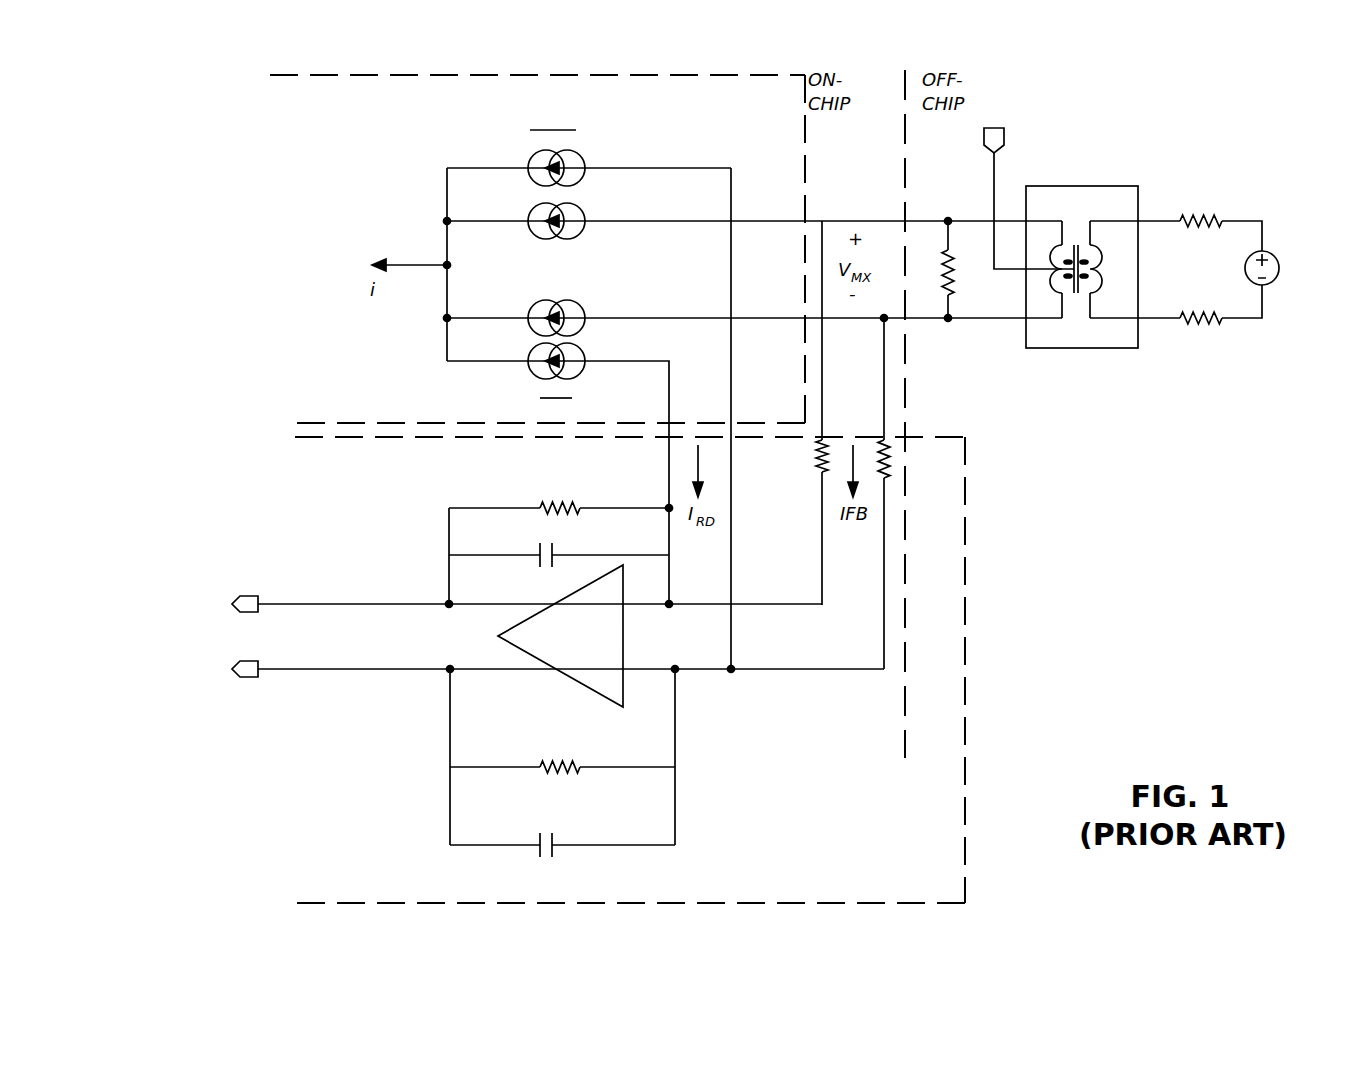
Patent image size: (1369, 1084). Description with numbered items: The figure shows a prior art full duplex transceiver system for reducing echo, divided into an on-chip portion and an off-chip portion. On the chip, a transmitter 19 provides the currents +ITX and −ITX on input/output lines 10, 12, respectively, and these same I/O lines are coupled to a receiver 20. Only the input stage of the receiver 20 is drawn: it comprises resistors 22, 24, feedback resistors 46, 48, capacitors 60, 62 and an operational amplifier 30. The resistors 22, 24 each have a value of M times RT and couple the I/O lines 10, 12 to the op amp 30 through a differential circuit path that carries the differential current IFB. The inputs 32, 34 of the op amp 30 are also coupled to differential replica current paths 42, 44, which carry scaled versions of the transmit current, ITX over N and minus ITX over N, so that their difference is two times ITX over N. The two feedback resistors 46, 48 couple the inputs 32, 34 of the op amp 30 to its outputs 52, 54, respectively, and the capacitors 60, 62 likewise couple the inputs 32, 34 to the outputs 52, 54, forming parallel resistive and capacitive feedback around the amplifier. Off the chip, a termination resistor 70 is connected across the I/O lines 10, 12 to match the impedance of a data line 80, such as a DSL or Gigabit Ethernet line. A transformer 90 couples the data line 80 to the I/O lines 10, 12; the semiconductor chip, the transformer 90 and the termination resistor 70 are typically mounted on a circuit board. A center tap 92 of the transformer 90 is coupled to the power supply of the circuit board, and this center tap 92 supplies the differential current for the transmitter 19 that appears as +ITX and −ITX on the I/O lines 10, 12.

The input/output line 10 is at (742, 221).
The input/output line 12 is at (742, 318).
The transmitter 19 is at (440, 75).
The receiver 20 is at (965, 616).
The resistor 22 is at (818, 476).
The resistor 24 is at (888, 478).
The operational amplifier 30 is at (560, 636).
The op amp input 32 is at (693, 604).
The op amp input 34 is at (693, 669).
The differential replica current path 42 is at (612, 361).
The differential replica current path 44 is at (600, 168).
The feedback resistor 46 is at (575, 510).
The feedback resistor 48 is at (578, 769).
The op amp output 52 is at (383, 604).
The op amp output 54 is at (383, 669).
The capacitor 60 is at (556, 556).
The capacitor 62 is at (556, 845).
The termination resistor 70 is at (947, 250).
The data line 80 is at (1160, 188).
The transformer 90 is at (1080, 186).
The center tap 92 is at (1010, 272).